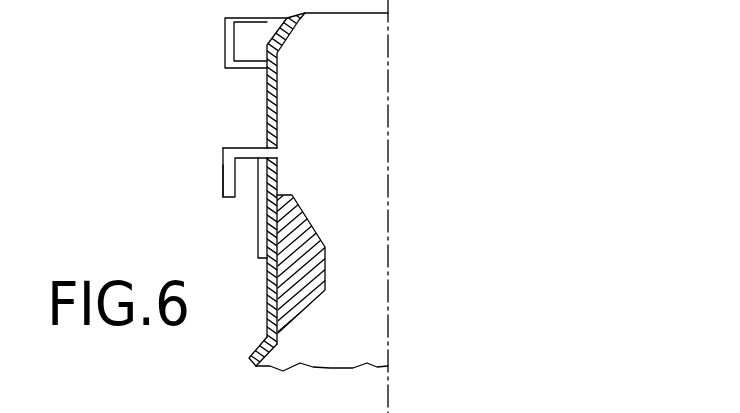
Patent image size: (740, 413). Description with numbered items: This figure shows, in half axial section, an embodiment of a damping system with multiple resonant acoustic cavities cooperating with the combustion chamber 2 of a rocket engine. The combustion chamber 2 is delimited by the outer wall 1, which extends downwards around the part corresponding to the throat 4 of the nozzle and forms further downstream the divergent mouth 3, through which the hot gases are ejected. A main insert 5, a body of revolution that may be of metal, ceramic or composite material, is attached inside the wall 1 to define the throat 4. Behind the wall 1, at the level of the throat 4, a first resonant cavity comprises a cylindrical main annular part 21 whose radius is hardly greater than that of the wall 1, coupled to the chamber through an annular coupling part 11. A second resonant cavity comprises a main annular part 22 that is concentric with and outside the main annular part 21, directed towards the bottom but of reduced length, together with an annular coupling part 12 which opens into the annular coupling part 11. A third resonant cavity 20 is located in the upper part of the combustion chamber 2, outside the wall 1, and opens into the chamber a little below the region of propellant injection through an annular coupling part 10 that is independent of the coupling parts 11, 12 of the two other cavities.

The outer wall 1 is at (268, 108).
The combustion chamber 2 is at (370, 72).
The divergent mouth 3 is at (250, 356).
The throat 4 is at (325, 270).
The main insert 5 is at (300, 295).
The annular coupling part 10 is at (243, 73).
The annular coupling part 11 is at (277, 153).
The annular coupling part 12 is at (237, 147).
The third resonant cavity 20 is at (223, 45).
The cylindrical main annular part 21 is at (257, 245).
The main annular part 22 is at (222, 180).